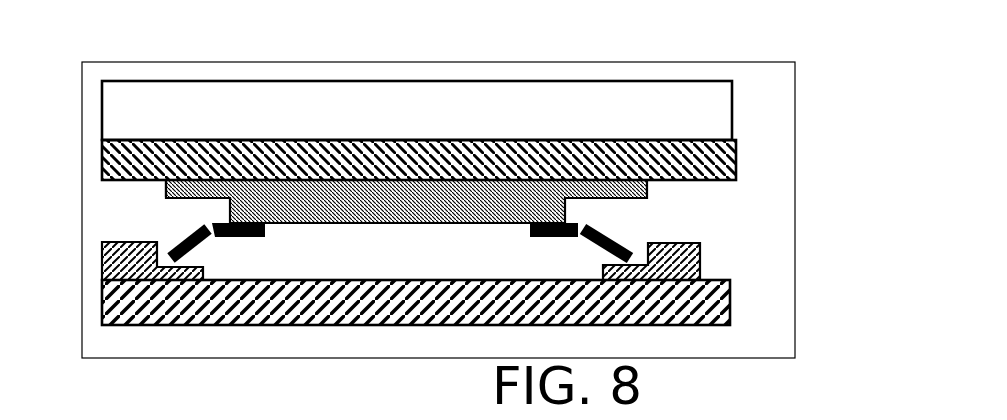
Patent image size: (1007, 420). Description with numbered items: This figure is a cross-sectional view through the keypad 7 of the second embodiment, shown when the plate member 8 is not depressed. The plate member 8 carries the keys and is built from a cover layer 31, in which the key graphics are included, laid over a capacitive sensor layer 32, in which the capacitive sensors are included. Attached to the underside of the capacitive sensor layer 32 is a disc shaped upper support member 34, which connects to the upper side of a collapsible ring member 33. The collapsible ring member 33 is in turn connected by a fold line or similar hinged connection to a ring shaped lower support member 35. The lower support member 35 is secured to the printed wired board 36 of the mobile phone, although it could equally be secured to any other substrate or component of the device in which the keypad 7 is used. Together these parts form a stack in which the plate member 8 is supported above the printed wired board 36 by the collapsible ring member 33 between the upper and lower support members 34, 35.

The keypad 7 is at (421, 186).
The plate member 8 is at (86, 116).
The cover layer 31 is at (707, 113).
The capacitive sensor layer 32 is at (736, 162).
The collapsible ring member 33 is at (613, 242).
The upper support member 34 is at (166, 190).
The lower support member 35 is at (700, 259).
The printed wired board 36 is at (673, 317).